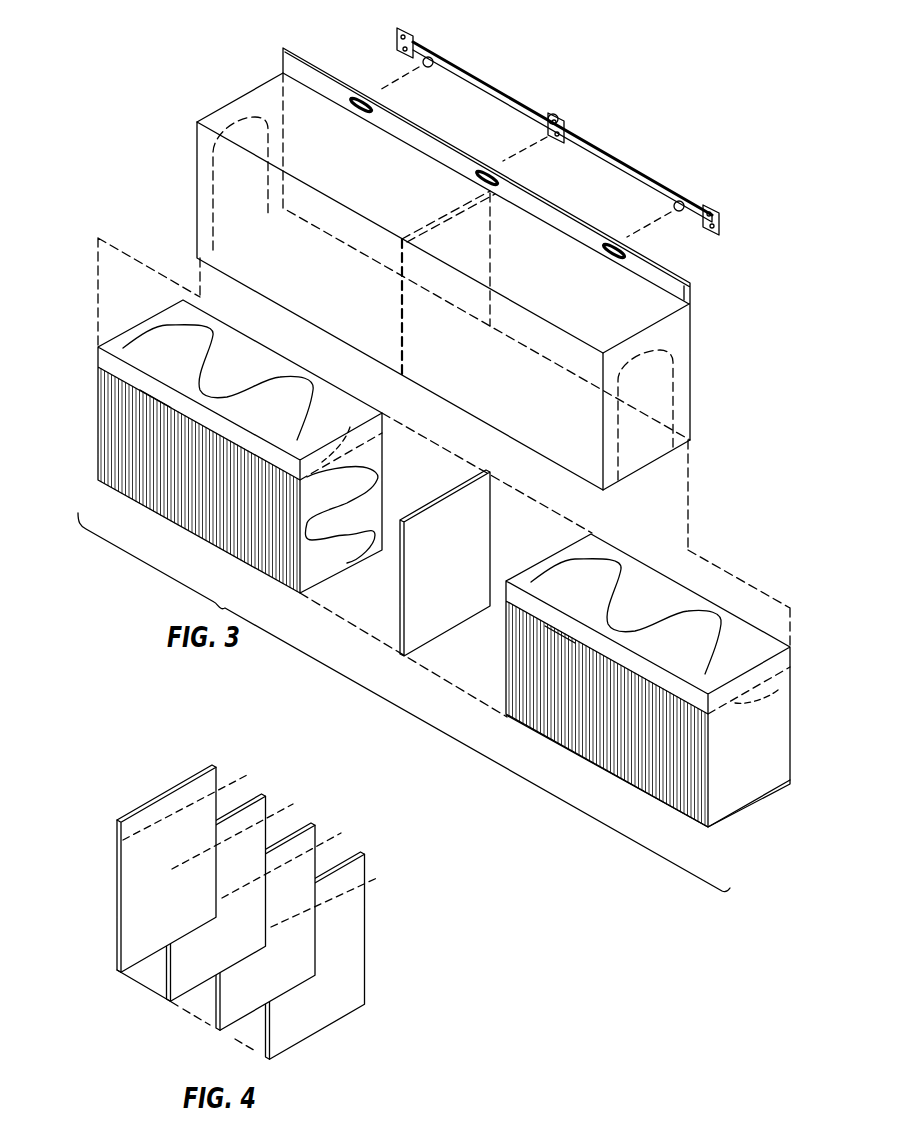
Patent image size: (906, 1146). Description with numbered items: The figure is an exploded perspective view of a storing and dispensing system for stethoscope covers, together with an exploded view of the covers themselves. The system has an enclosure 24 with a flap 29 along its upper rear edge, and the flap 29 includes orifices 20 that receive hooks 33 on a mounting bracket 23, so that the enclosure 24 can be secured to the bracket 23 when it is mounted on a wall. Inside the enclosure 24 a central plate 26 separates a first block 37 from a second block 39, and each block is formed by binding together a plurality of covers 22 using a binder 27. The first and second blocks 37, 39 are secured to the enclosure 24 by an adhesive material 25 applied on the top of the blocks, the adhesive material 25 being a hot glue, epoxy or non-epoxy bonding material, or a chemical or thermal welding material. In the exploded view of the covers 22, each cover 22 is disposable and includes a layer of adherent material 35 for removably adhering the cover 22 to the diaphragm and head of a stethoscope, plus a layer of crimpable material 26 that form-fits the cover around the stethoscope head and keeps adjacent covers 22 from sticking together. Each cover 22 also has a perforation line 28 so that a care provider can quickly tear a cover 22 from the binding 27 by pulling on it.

In FIG. 3, the orifices 20 is at (362, 100).
In FIG. 3, the covers 22 is at (742, 808).
In FIG. 4, the covers 22 is at (302, 998).
In FIG. 3, the mounting bracket 23 is at (618, 152).
In FIG. 3, the enclosure 24 is at (249, 101).
In FIG. 3, the adhesive material 25 is at (165, 325).
In FIG. 3, the central plate 26 is at (445, 613).
In FIG. 4, the central plate 26 is at (117, 857).
In FIG. 3, the binder 27 is at (163, 393).
In FIG. 3, the perforation line 28 is at (350, 427).
In FIG. 4, the perforation line 28 is at (265, 845).
In FIG. 3, the flap 29 is at (672, 282).
In FIG. 3, the hooks 33 is at (432, 62).
In FIG. 4, the layer of adherent material 35 is at (136, 948).
In FIG. 3, the first block 37 is at (702, 585).
In FIG. 3, the second block 39 is at (86, 368).